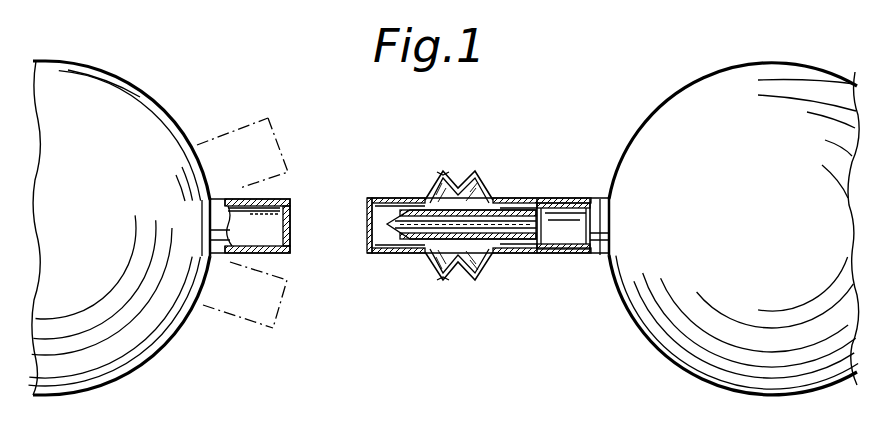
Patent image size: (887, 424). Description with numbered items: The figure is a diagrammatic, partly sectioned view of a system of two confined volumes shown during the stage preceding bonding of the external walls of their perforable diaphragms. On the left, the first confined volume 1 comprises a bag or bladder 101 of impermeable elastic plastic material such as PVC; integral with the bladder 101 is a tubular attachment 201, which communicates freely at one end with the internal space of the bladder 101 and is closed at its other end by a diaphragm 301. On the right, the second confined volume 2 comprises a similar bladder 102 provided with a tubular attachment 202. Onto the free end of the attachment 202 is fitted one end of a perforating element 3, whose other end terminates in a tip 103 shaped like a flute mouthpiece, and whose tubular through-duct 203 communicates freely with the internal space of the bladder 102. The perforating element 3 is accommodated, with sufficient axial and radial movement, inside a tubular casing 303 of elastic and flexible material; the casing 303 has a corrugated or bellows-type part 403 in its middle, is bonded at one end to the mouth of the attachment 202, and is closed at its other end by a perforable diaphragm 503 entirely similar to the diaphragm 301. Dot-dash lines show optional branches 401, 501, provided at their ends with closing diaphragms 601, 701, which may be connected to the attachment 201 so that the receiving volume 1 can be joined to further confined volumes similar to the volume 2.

The first confined volume 1 is at (70, 50).
The bladder 101 is at (168, 108).
The second confined volume 2 is at (690, 78).
The bladder 102 is at (766, 66).
The perforating element 3 is at (442, 266).
The tip 103 is at (399, 253).
The tubular attachment 201 is at (268, 200).
The tubular attachment 202 is at (580, 199).
The tubular through-duct 203 is at (506, 199).
The diaphragm 301 is at (292, 218).
The tubular casing 303 is at (500, 255).
The branch 401 is at (217, 136).
The corrugated or bellows-type part 403 is at (445, 168).
The branch 501 is at (225, 318).
The perforable diaphragm 503 is at (368, 238).
The closing diaphragm 601 is at (283, 128).
The closing diaphragm 701 is at (278, 325).